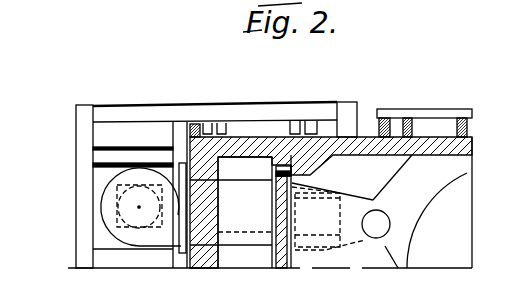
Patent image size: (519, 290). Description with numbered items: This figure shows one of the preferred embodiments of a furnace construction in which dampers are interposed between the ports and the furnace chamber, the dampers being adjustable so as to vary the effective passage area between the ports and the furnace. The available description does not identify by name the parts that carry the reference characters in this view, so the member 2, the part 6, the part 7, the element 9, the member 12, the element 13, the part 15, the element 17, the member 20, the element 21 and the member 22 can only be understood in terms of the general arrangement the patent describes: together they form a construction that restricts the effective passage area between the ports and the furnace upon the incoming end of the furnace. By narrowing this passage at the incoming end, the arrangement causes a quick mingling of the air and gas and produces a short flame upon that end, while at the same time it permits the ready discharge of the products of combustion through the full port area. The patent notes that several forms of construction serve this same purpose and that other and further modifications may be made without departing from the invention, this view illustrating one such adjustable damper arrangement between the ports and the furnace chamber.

The frame 2 is at (4, 280).
The crank pin 6 is at (376, 224).
The cam disc 7 is at (450, 235).
The cylinder 9 is at (258, 163).
The base 12 is at (312, 285).
The motor 13 is at (272, 193).
The shaft 15 is at (248, 234).
The armature 17 is at (272, 232).
The piston 20 is at (230, 185).
The connecting rod 21 is at (328, 218).
The link 22 is at (300, 183).